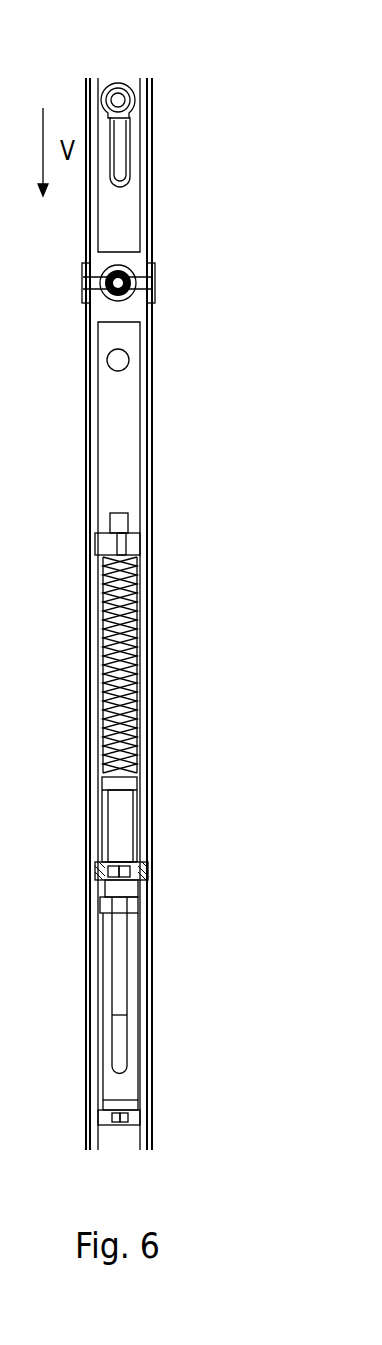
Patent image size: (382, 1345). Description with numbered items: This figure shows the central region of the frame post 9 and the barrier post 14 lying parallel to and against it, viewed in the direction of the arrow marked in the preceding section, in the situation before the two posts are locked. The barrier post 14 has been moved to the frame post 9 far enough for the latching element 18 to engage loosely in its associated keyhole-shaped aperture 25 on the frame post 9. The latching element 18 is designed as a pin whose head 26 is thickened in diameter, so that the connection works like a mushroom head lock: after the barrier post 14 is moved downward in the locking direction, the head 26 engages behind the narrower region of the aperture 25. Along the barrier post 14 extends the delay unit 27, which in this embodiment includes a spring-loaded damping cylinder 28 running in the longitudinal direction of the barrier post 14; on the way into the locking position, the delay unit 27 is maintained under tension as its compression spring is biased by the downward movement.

The frame post 9 is at (125, 228).
The barrier post 14 is at (152, 313).
The latching element 18 is at (126, 94).
The aperture 25 is at (118, 166).
The head 26 is at (124, 97).
The delay unit 27 is at (152, 921).
The damping cylinder 28 is at (123, 1079).